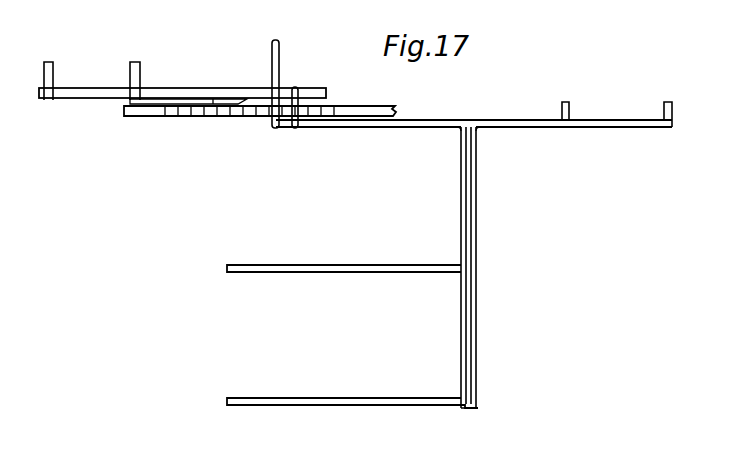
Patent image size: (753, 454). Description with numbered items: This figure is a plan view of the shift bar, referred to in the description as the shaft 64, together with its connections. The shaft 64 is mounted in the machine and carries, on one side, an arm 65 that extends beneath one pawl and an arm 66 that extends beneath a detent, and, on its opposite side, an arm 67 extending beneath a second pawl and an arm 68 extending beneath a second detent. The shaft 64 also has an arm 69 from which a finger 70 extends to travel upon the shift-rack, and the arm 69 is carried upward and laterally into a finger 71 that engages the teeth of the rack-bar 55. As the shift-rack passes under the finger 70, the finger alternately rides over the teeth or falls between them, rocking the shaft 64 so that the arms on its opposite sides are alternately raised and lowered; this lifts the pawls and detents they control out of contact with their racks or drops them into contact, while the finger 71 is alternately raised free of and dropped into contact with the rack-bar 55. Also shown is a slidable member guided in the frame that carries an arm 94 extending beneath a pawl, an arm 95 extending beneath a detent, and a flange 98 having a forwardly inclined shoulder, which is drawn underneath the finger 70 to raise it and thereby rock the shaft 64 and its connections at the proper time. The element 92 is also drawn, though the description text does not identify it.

The rack-bar 55 is at (242, 116).
The shaft 64 is at (478, 366).
The arm 65 is at (672, 127).
The arm 66 is at (569, 108).
The arm 67 is at (375, 398).
The arm 68 is at (358, 265).
The arm 69 is at (392, 128).
The finger 70 is at (296, 88).
The finger 71 is at (272, 47).
The slide strip 92 is at (217, 98).
The arm 94 is at (50, 62).
The arm 95 is at (135, 62).
The flange 98 is at (318, 88).